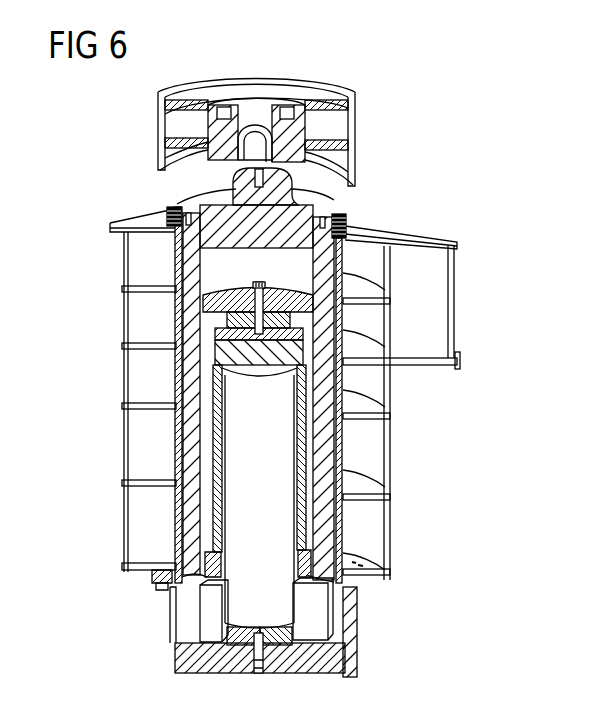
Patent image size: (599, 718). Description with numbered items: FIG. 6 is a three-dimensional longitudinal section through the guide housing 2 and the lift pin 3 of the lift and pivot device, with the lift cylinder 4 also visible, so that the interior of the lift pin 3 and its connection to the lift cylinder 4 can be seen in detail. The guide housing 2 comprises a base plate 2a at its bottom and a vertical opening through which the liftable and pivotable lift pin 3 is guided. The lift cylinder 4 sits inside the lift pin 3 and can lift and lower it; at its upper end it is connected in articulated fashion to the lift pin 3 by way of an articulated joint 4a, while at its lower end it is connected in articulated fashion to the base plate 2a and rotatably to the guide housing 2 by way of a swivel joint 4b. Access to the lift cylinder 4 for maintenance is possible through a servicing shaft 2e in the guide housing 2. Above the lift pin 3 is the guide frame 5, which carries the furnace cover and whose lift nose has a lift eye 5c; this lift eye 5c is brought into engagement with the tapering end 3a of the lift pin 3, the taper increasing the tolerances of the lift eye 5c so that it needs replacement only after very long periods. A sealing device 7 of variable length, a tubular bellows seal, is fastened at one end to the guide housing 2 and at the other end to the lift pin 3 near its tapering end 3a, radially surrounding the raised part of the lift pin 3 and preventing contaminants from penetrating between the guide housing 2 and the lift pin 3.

The guide housing 2 is at (139, 224).
The base plate 2a is at (180, 652).
The servicing shaft 2e is at (175, 608).
The lift pin 3 is at (320, 453).
The tapering end 3a is at (298, 179).
The lift cylinder 4 is at (235, 443).
The articulated joint 4a is at (213, 297).
The swivel joint 4b is at (300, 642).
The guide frame 5 is at (282, 112).
The lift eye 5c is at (250, 128).
The sealing device 7 is at (343, 236).